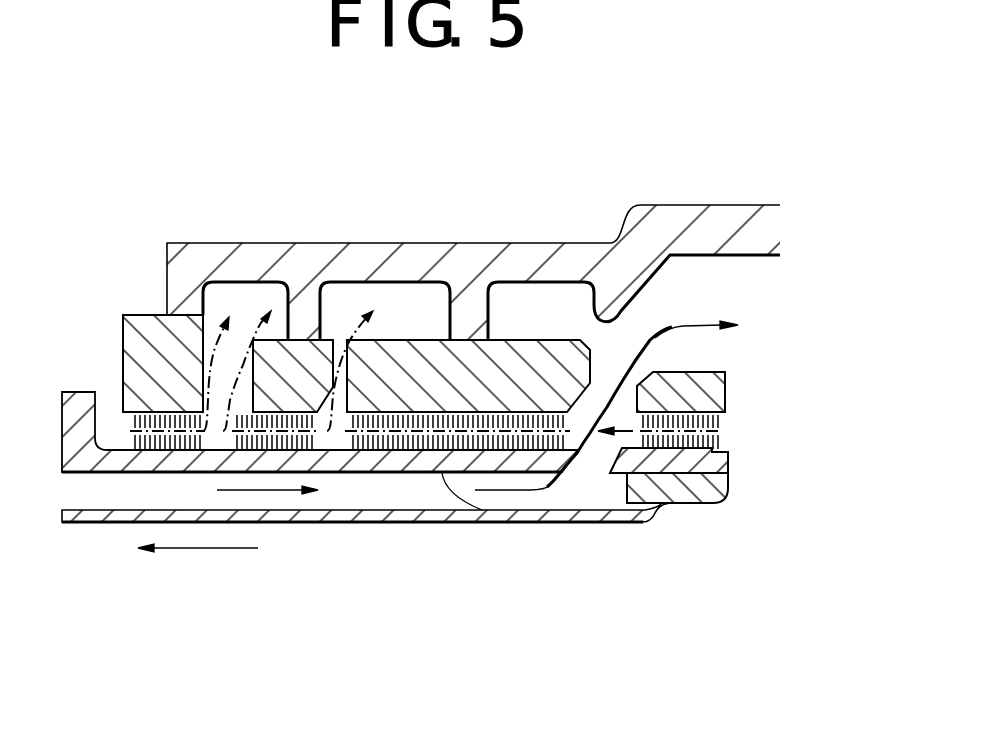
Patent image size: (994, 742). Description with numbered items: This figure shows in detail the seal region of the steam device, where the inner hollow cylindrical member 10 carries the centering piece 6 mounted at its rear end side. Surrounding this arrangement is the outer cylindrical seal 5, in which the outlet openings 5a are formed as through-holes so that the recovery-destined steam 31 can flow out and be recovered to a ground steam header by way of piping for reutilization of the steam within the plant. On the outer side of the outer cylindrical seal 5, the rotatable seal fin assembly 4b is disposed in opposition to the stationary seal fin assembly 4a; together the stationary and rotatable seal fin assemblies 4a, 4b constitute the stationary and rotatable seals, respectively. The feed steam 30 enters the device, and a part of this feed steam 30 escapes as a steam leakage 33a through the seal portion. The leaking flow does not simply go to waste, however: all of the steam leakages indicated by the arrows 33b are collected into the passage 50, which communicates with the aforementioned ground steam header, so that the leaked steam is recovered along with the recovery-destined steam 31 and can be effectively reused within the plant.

The stationary seal fin assembly 4a is at (442, 473).
The rotatable seal fin assembly 4b is at (515, 522).
The outer cylindrical seal 5 is at (410, 473).
The outlet openings 5a is at (582, 468).
The centering piece 6 is at (680, 500).
The inner hollow cylindrical member 10 is at (450, 510).
The feed steam 30 is at (153, 552).
The recovery-destined steam 31 is at (280, 490).
The steam leakage 33a is at (743, 525).
The steam leakages 33b is at (258, 307).
The passage 50 is at (772, 318).